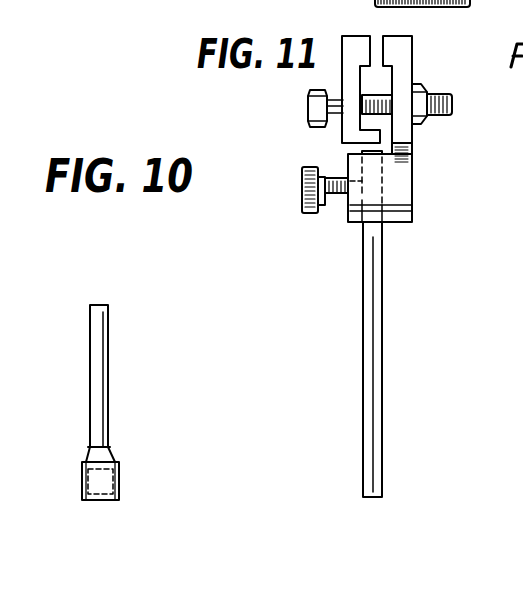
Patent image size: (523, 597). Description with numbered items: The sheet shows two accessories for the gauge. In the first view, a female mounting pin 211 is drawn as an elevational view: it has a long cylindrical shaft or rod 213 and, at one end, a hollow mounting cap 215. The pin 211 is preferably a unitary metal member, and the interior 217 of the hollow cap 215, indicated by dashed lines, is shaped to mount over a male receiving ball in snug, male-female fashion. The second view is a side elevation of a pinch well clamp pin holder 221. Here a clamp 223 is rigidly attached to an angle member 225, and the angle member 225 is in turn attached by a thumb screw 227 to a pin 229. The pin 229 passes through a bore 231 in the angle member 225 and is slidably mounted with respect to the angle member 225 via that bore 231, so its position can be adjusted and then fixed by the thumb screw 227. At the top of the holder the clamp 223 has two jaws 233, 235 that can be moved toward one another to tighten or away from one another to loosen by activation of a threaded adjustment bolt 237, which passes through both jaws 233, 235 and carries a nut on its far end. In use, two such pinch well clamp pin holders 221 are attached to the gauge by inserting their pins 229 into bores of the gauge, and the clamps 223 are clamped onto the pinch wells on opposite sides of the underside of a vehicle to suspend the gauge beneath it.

In FIG. 10, the female mounting pin 211 is at (116, 364).
In FIG. 10, the cylindrical shaft 213 is at (98, 305).
In FIG. 10, the hollow mounting cap 215 is at (88, 451).
In FIG. 10, the interior of the hollow cap 217 is at (106, 482).
In FIG. 11, the pinch well clamp pin holder 221 is at (359, 248).
In FIG. 11, the clamp 223 is at (380, 38).
In FIG. 11, the angle member 225 is at (427, 175).
In FIG. 11, the thumb screw 227 is at (303, 184).
In FIG. 11, the pin 229 is at (375, 358).
In FIG. 11, the bore 231 is at (384, 174).
In FIG. 11, the jaw 233 is at (428, 34).
In FIG. 11, the jaw 235 is at (342, 75).
In FIG. 11, the threaded adjustment bolt 237 is at (309, 104).